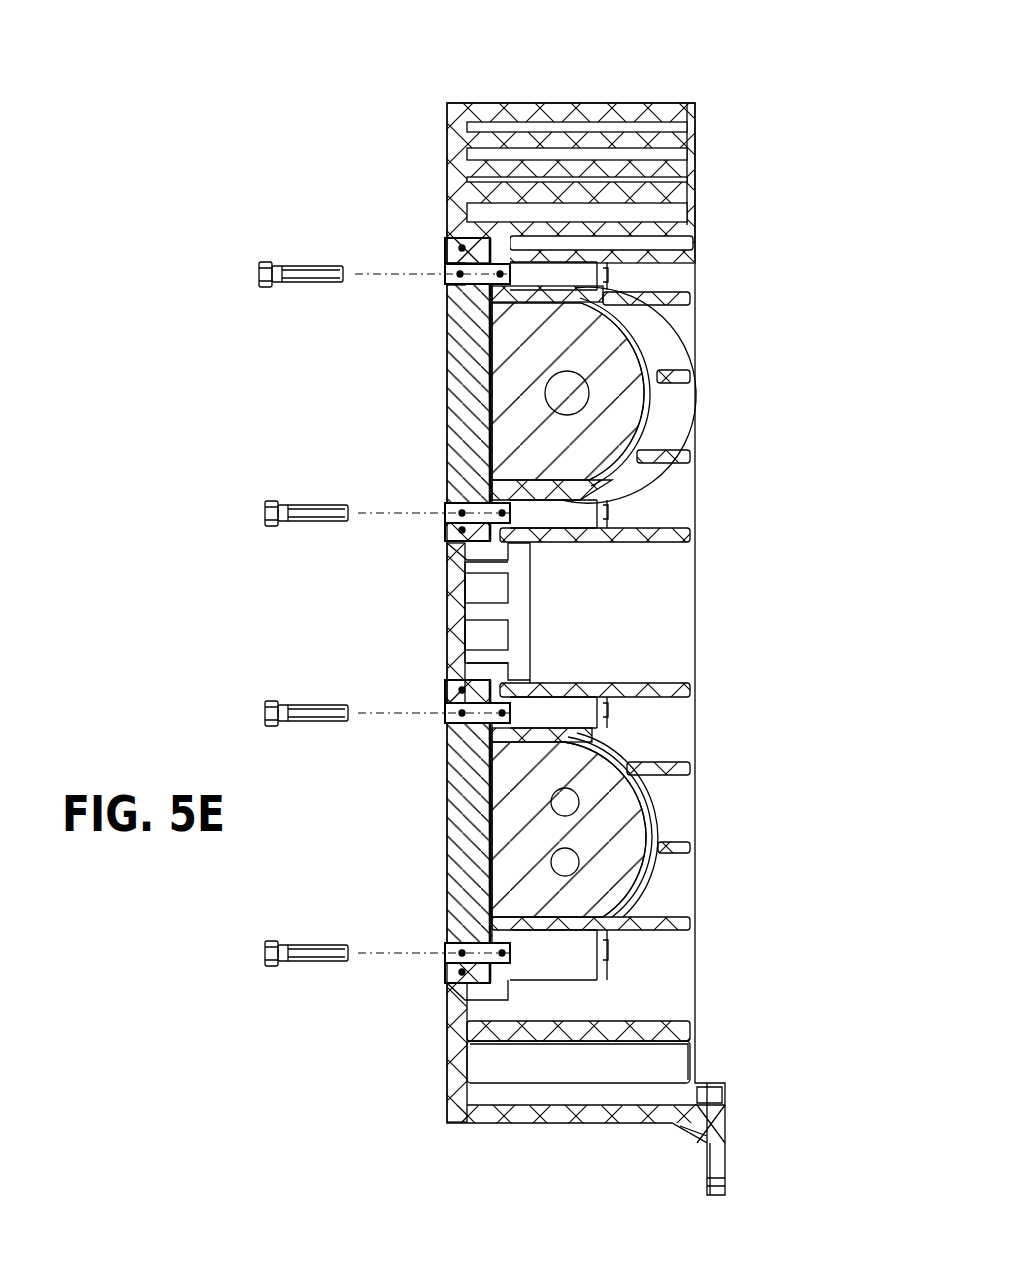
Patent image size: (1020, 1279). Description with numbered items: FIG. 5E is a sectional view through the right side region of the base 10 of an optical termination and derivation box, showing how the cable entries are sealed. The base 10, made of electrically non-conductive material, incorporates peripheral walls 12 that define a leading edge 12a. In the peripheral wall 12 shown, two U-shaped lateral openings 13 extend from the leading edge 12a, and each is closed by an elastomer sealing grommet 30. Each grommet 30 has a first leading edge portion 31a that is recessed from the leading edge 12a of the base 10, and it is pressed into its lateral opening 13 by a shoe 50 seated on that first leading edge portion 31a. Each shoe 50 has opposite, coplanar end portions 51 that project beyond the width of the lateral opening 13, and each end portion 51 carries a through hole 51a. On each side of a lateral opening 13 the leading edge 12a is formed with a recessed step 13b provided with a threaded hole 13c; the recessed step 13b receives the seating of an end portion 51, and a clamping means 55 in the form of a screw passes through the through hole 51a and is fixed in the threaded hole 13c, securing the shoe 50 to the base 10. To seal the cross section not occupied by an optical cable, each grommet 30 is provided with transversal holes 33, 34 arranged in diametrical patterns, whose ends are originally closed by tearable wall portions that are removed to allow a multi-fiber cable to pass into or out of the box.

The base 10 is at (481, 612).
The peripheral walls 12 is at (568, 98).
The leading edge 12a is at (445, 148).
The lateral openings 13 is at (647, 400).
The recessed step 13b is at (481, 255).
The threaded hole 13c is at (500, 278).
The sealing grommet 30 is at (625, 603).
The first leading edge portion 31a is at (487, 440).
The transversal hole 33 is at (580, 395).
The transversal hole 34 is at (573, 798).
The shoe 50 is at (444, 400).
The end portions 51 is at (460, 246).
The through hole 51a is at (460, 276).
The clamping means 55 is at (297, 260).